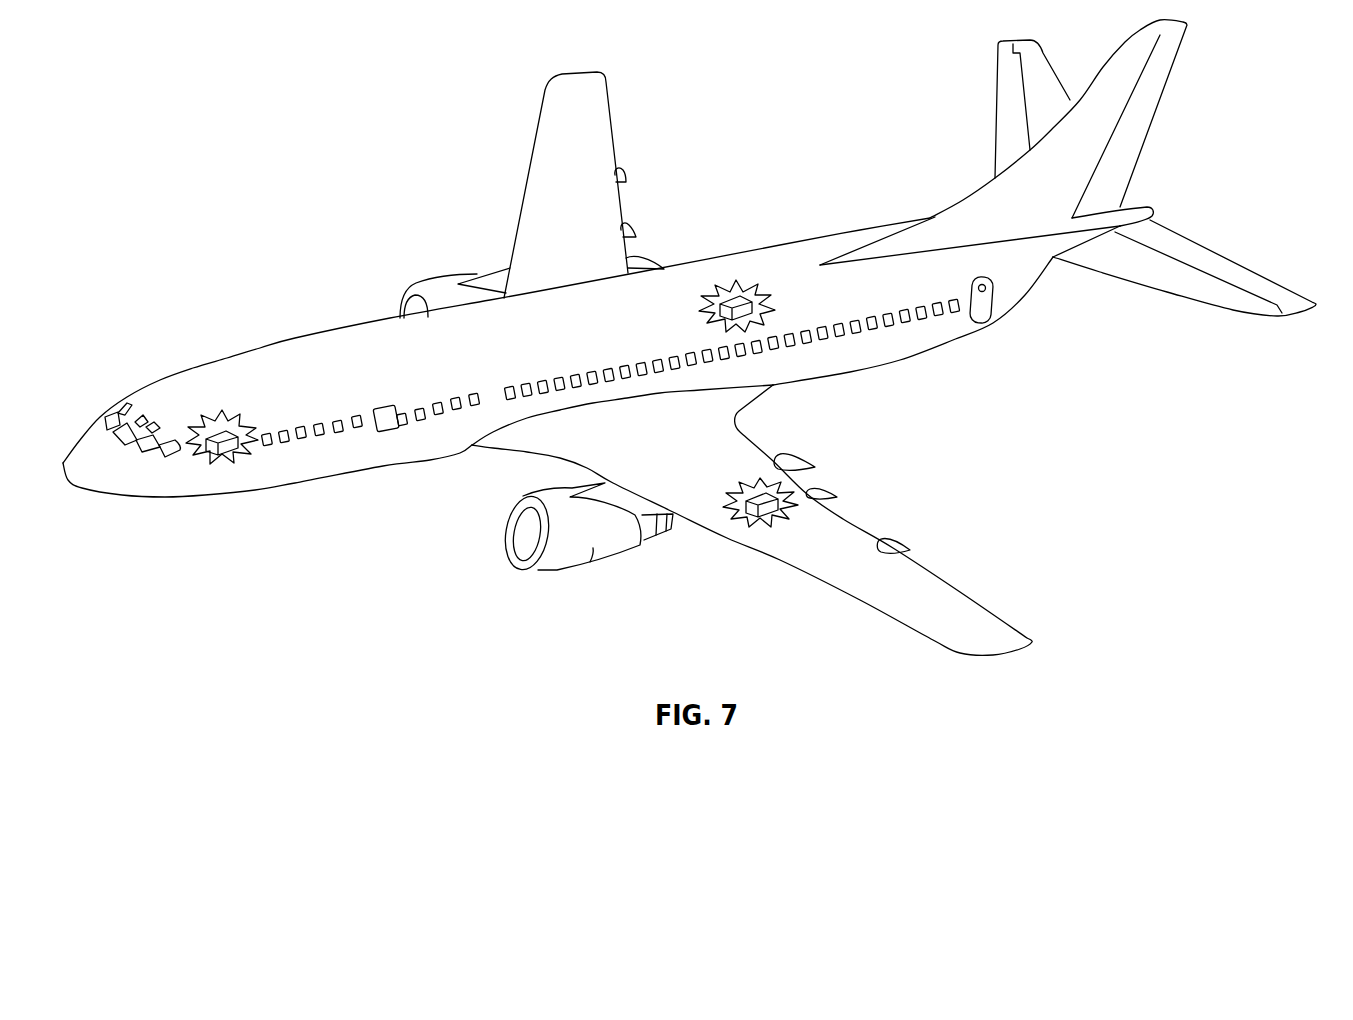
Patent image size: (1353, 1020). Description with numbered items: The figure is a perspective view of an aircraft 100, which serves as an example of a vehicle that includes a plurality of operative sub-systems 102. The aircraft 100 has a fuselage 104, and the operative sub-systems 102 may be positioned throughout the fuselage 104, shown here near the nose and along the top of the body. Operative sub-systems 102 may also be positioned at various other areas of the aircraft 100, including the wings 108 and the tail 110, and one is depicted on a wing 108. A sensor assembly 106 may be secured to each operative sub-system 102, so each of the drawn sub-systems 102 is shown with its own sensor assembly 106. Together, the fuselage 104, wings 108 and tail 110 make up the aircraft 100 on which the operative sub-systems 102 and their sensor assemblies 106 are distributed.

The aircraft 100 is at (186, 214).
The operative sub-system 102 is at (223, 433).
The fuselage 104 is at (295, 477).
The sensor assembly 106 is at (232, 446).
The wings 108 is at (592, 107).
The tail 110 is at (1120, 208).